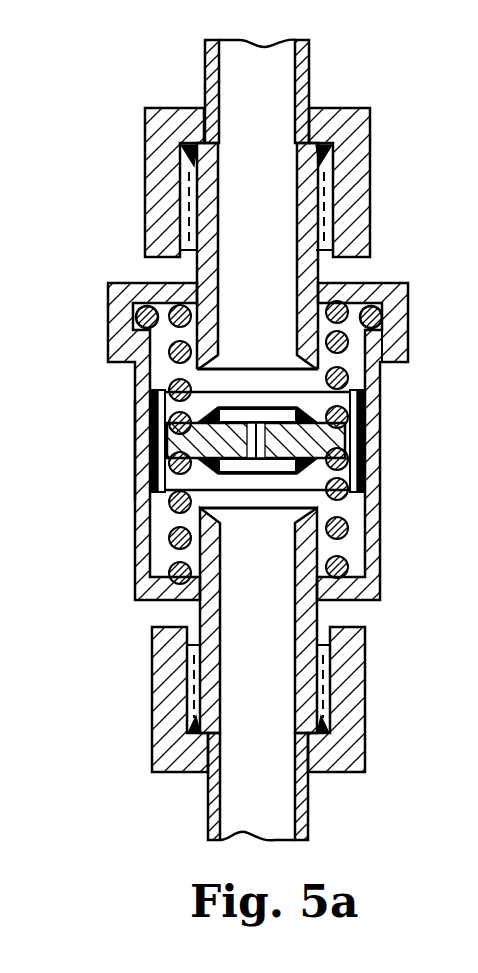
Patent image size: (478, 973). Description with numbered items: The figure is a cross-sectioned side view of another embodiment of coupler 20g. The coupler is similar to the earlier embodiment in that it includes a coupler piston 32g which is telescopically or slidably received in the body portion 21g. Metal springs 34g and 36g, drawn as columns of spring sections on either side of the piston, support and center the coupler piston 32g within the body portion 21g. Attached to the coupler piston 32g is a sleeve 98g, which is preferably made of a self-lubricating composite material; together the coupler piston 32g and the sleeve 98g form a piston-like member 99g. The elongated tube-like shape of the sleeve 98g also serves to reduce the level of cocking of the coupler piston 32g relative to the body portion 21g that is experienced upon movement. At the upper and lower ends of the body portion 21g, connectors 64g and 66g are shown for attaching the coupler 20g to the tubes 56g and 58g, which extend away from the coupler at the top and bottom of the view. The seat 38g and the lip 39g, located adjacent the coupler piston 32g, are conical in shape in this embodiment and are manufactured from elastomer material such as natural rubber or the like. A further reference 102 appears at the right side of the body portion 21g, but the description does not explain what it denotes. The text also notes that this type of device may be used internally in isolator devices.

The coupler 20g is at (335, 108).
The tube 56g is at (205, 47).
The connector 64g is at (370, 150).
The body portion 21g is at (375, 372).
The body port 102 is at (430, 356).
The metal spring 34g is at (146, 375).
The metal spring 36g is at (175, 540).
The sleeve 98g is at (362, 470).
The piston-like member 99g is at (148, 447).
The coupler piston 32g is at (345, 431).
The seat 38g is at (153, 481).
The lip 39g is at (220, 514).
The connector 66g is at (363, 650).
The tube 58g is at (309, 797).